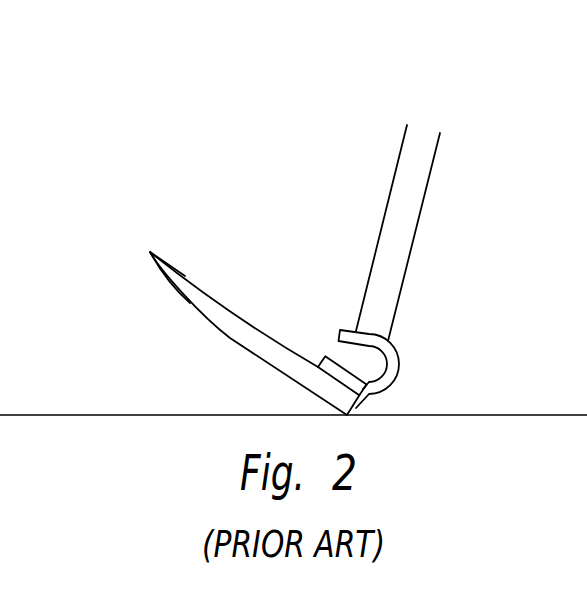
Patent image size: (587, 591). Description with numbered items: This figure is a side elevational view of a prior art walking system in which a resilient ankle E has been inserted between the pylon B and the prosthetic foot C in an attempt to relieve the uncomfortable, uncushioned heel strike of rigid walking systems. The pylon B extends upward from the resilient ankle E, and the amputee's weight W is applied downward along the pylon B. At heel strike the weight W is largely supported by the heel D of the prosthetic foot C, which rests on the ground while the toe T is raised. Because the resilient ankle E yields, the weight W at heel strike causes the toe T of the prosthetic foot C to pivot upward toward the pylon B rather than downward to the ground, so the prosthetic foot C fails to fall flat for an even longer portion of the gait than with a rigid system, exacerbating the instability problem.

The weight W is at (428, 108).
The pylon B is at (416, 228).
The resilient ankle E is at (388, 361).
The heel D is at (383, 410).
The prosthetic foot C is at (277, 356).
The toe T is at (166, 283).